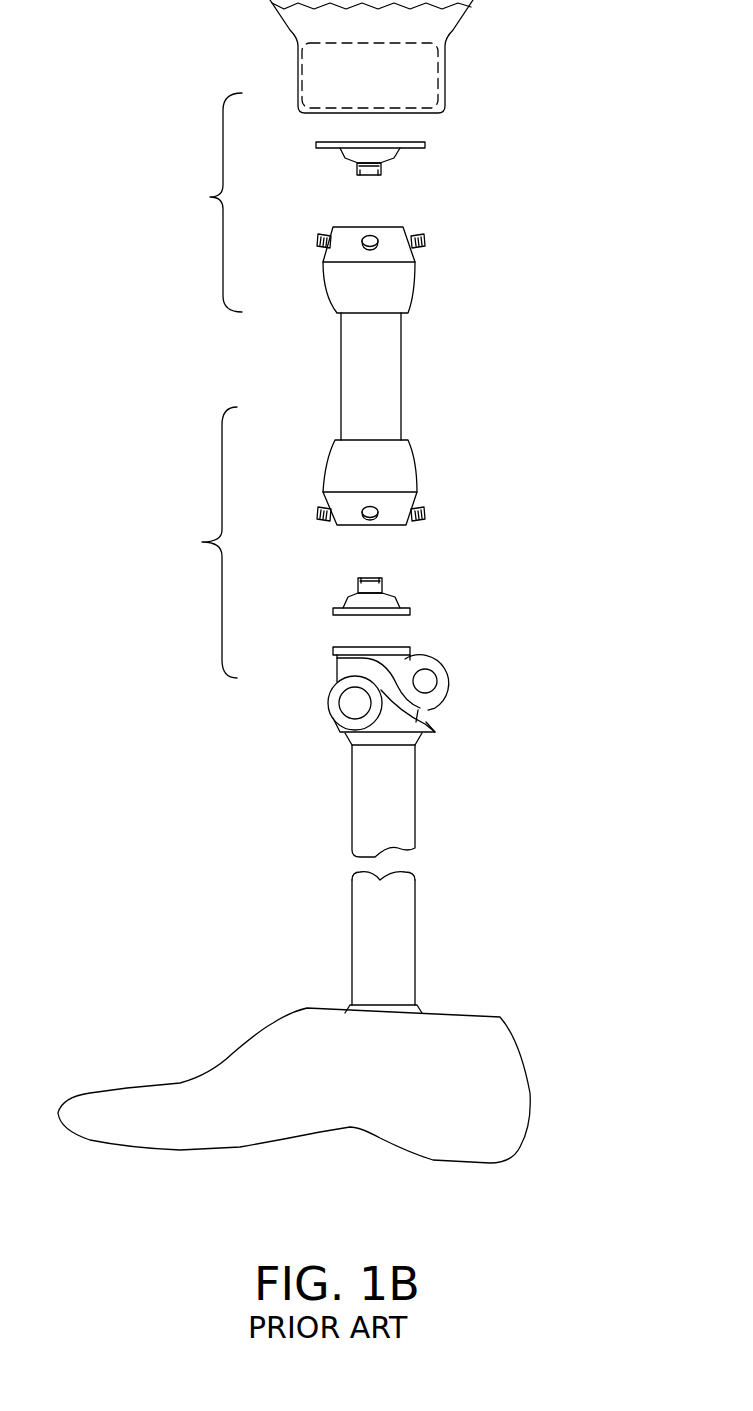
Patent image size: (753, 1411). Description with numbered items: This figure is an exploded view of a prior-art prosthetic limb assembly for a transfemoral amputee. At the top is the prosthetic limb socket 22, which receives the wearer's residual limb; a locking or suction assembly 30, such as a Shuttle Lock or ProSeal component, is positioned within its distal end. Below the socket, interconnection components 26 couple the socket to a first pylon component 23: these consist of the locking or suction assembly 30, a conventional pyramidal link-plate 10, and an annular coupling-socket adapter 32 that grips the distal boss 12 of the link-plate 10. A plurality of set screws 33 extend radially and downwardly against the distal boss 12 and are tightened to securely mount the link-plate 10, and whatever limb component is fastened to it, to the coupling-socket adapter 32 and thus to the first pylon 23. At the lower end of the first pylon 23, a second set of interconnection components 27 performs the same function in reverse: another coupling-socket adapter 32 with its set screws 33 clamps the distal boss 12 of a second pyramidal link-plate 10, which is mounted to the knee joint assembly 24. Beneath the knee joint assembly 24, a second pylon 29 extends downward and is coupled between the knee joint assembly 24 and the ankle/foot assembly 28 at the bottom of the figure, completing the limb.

The pyramidal link-plate 10 is at (420, 378).
The distal boss 12 is at (358, 172).
The prosthetic limb socket 22 is at (456, 20).
The first pylon component 23 is at (392, 365).
The knee joint assembly 24 is at (302, 713).
The interconnection components 26 is at (198, 202).
The interconnection components 27 is at (194, 542).
The ankle/foot assembly 28 is at (483, 978).
The second pylon 29 is at (405, 808).
The locking or suction assembly 30 is at (424, 77).
The annular coupling-socket adapter 32 is at (405, 293).
The set screws 33 is at (425, 240).